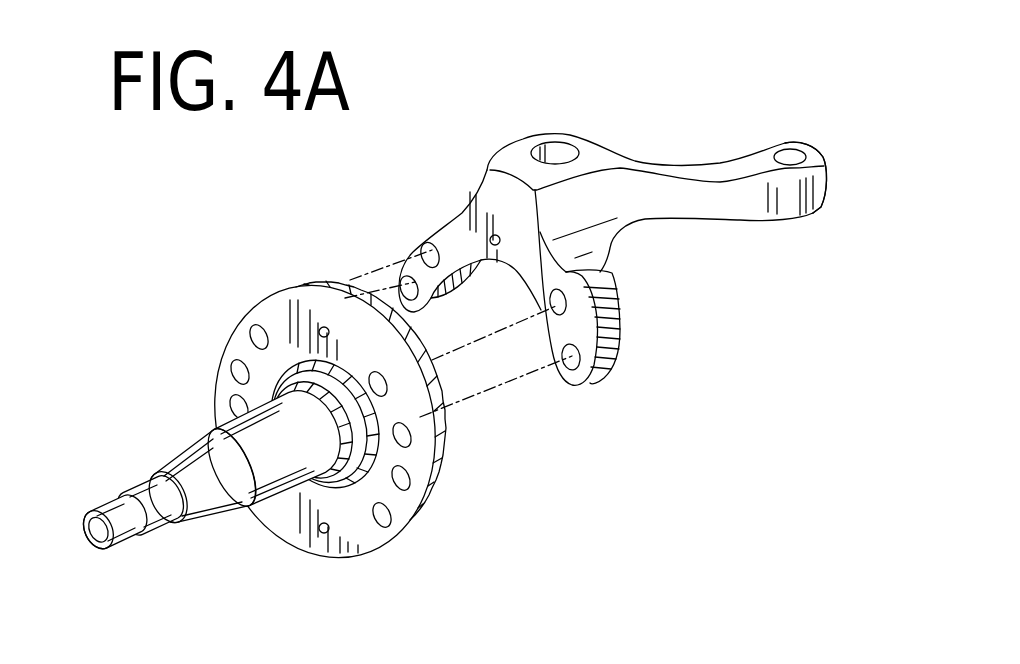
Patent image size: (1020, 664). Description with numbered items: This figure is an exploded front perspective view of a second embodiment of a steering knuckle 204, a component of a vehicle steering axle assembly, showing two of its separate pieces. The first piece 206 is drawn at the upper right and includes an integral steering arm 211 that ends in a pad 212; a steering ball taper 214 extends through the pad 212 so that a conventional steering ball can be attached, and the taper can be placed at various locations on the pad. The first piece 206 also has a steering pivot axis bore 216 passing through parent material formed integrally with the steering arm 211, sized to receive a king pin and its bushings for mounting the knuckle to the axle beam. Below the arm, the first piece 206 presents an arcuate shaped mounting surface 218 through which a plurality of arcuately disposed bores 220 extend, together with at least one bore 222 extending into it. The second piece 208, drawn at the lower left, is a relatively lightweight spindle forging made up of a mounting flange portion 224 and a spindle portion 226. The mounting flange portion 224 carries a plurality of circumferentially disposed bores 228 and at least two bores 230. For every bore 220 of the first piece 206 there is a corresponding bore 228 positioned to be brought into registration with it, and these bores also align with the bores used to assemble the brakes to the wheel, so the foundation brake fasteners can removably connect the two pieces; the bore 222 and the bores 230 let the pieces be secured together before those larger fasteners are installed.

The steering knuckle 204 is at (390, 205).
The first piece 206 is at (584, 215).
The second piece 208 is at (305, 435).
The steering arm 211 is at (660, 164).
The pad 212 is at (812, 160).
The steering ball taper 214 is at (793, 152).
The steering pivot axis bore 216 is at (556, 150).
The arcuate shaped mounting surface 218 is at (525, 211).
The arcuately disposed bores 220 is at (428, 253).
The bore 222 is at (490, 239).
The mounting flange portion 224 is at (282, 307).
The spindle portion 226 is at (207, 503).
The circumferentially disposed bores 228 is at (258, 333).
The bores 230 is at (330, 332).